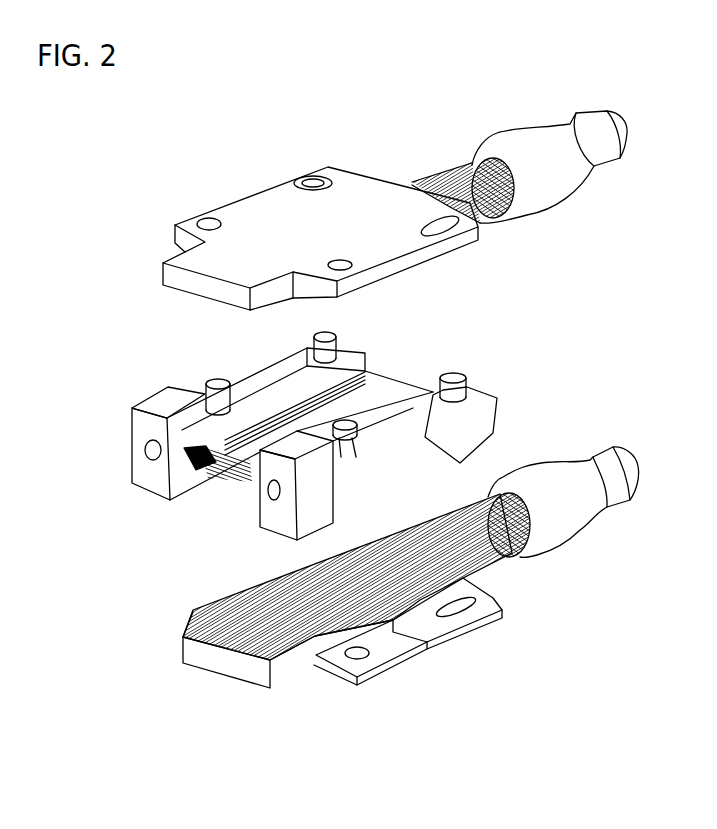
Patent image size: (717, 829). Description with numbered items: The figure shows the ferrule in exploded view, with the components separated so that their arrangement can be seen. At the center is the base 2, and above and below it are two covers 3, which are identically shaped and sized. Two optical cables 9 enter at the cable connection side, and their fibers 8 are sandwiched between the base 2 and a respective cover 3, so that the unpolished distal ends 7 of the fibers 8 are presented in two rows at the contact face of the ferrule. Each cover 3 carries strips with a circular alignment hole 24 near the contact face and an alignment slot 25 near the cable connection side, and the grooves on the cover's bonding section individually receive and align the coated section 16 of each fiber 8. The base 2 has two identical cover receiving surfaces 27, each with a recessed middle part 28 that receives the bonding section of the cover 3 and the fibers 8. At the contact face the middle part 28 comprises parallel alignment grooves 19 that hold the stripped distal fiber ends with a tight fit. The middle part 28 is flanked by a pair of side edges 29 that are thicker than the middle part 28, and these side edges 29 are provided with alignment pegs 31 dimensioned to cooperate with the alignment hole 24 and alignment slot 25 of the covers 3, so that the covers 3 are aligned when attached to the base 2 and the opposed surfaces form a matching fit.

The base 2 is at (315, 433).
The cover 3 is at (477, 231).
The distal end 7 is at (176, 636).
The fiber 8 is at (320, 636).
The optical cable 9 is at (621, 147).
The coated section 16 is at (388, 593).
The grooves 19 is at (198, 462).
The alignment hole 24 is at (208, 218).
The alignment slot 25 is at (313, 177).
The cover receiving surface 27 is at (433, 356).
The middle part 28 is at (377, 388).
The side edges 29 is at (305, 355).
The alignment pegs 31 is at (206, 387).